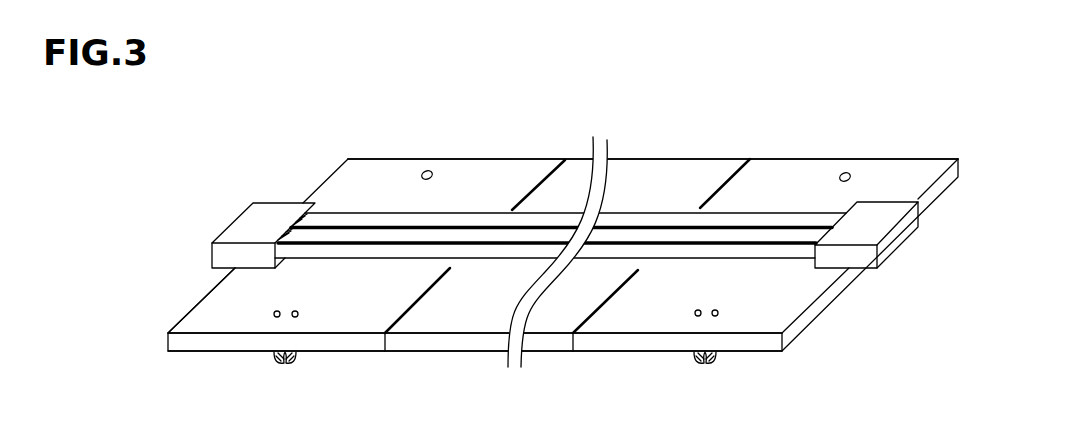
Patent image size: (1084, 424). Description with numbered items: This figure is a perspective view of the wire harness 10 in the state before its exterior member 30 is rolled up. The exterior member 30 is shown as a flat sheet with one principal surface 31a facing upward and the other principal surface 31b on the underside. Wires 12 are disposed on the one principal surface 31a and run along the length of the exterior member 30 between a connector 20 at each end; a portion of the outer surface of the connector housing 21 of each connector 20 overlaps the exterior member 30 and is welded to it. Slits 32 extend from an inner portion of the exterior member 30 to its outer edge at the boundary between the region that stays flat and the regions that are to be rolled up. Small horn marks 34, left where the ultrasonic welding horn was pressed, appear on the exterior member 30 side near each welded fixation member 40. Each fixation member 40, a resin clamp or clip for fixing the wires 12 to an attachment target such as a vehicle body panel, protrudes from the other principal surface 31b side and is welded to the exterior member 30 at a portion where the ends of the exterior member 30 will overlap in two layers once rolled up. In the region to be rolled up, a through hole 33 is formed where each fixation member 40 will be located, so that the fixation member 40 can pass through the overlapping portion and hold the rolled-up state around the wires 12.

The wire harness 10 is at (287, 63).
The wire 12 is at (720, 248).
The connector 20 is at (267, 200).
The connector housing 21 is at (245, 228).
The exterior member 30 is at (650, 175).
The one principal surface 31a is at (792, 313).
The other principal surface 31b is at (762, 352).
The slits 32 is at (537, 168).
The through hole 33 is at (428, 170).
The horn marks 34 is at (281, 311).
The fixation member 40 is at (294, 369).